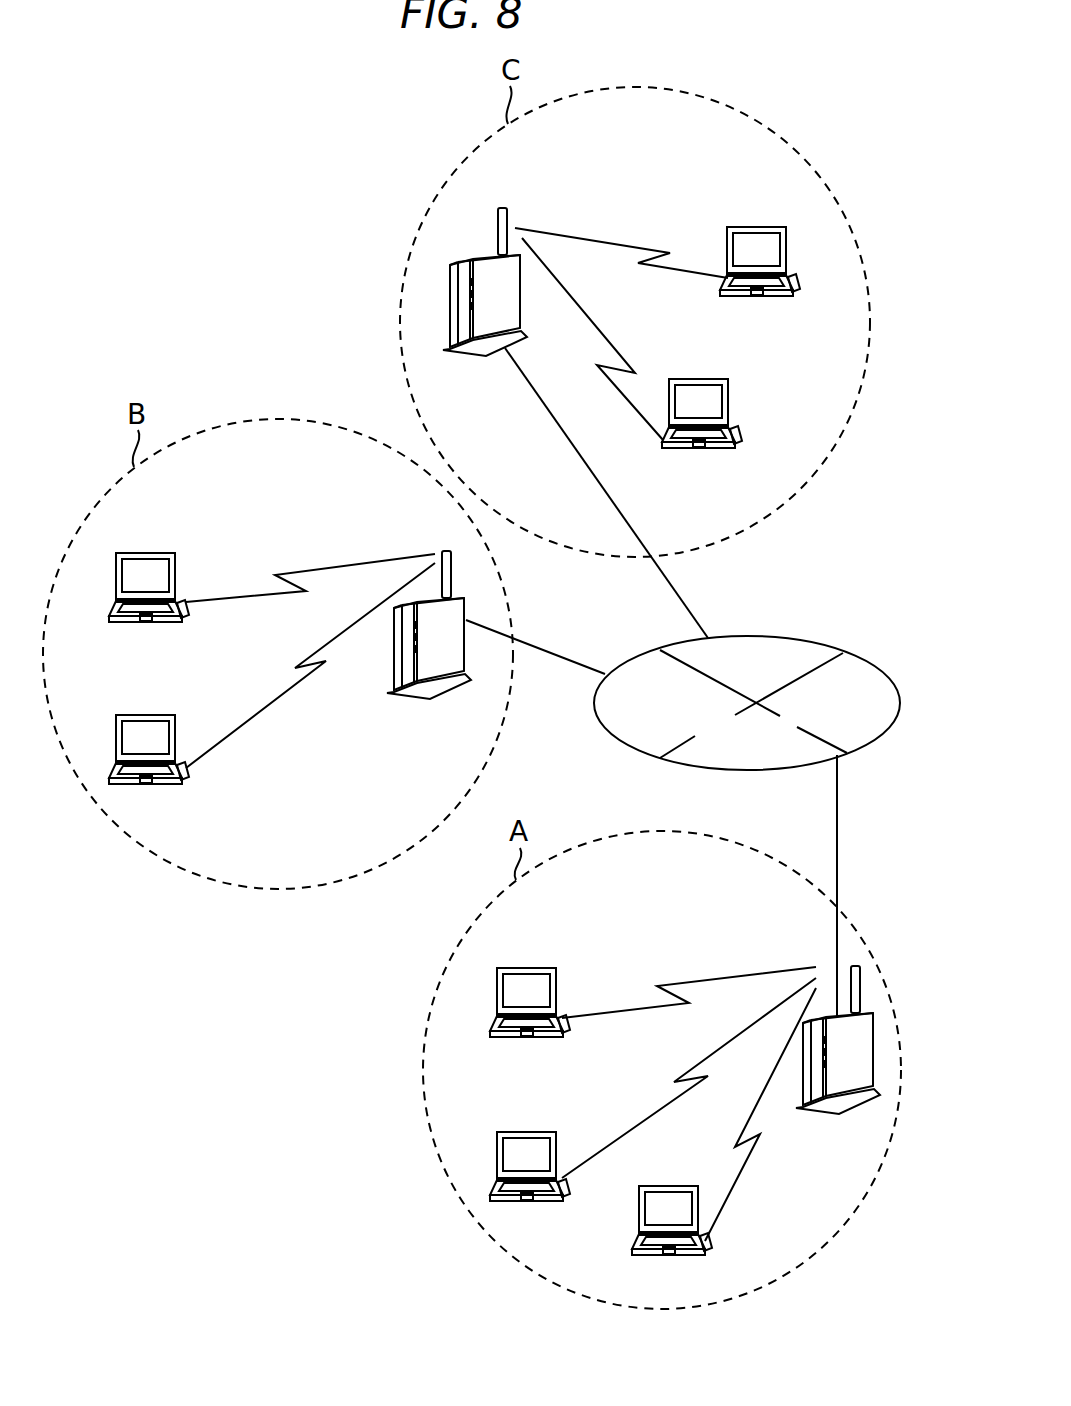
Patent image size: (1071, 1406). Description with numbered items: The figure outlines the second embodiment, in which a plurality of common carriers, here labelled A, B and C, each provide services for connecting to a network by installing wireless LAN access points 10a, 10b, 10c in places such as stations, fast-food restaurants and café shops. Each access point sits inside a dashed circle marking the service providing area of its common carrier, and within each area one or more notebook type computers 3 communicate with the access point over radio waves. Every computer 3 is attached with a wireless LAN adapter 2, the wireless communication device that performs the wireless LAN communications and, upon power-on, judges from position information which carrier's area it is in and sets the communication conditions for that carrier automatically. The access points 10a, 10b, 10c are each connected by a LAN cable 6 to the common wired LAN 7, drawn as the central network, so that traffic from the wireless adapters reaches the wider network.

The wireless LAN adapter 2 is at (800, 285).
The computer 3 is at (765, 227).
The LAN cable 6 is at (696, 621).
The wired LAN 7 is at (800, 638).
The wireless LAN access point 10a is at (822, 1112).
The wireless LAN access point 10b is at (458, 693).
The wireless LAN access point 10c is at (490, 357).